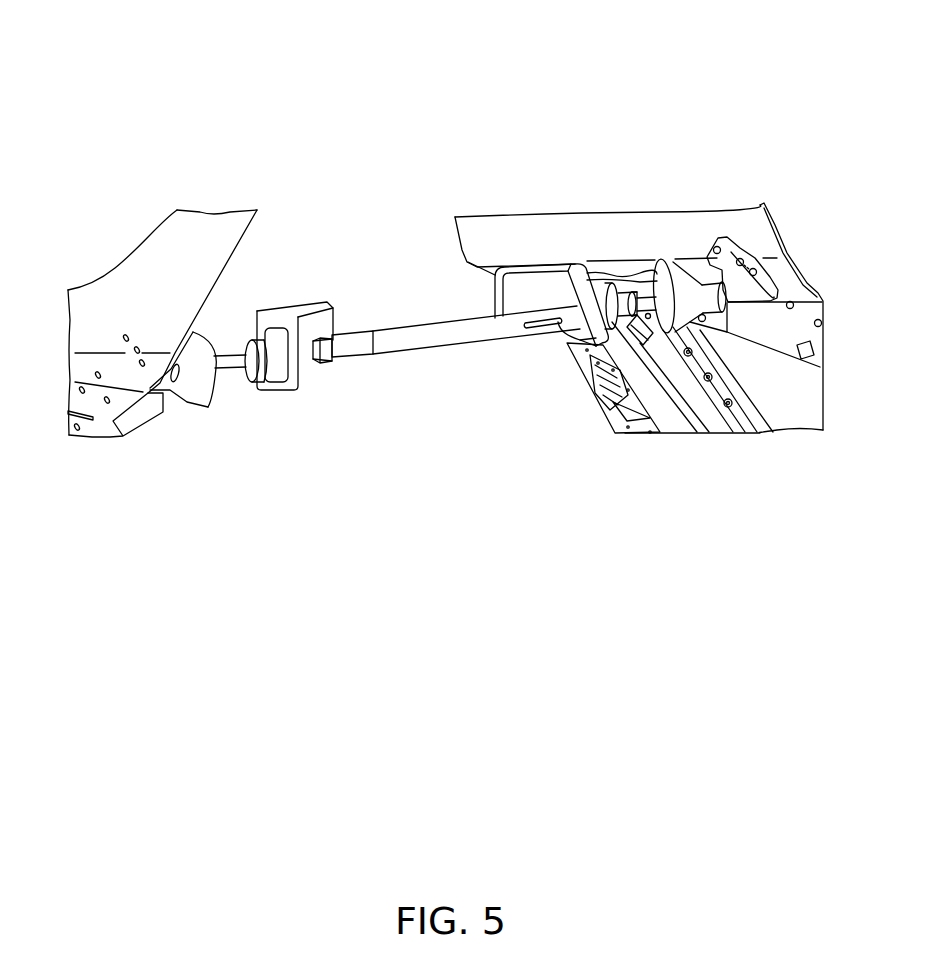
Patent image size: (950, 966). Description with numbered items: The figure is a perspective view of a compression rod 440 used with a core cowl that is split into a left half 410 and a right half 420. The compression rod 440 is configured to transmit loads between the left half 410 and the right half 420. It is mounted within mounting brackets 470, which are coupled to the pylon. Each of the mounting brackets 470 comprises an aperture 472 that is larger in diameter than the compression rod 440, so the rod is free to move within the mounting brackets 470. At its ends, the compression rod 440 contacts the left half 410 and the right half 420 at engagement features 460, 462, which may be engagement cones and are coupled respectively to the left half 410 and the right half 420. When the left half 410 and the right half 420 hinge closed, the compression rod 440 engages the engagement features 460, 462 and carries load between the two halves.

The left half 410 is at (214, 212).
The right half 420 is at (722, 210).
The compression rod 440 is at (427, 323).
The engagement feature 460 is at (190, 397).
The engagement feature 462 is at (733, 398).
The mounting bracket 470 is at (323, 301).
The aperture 472 is at (280, 390).